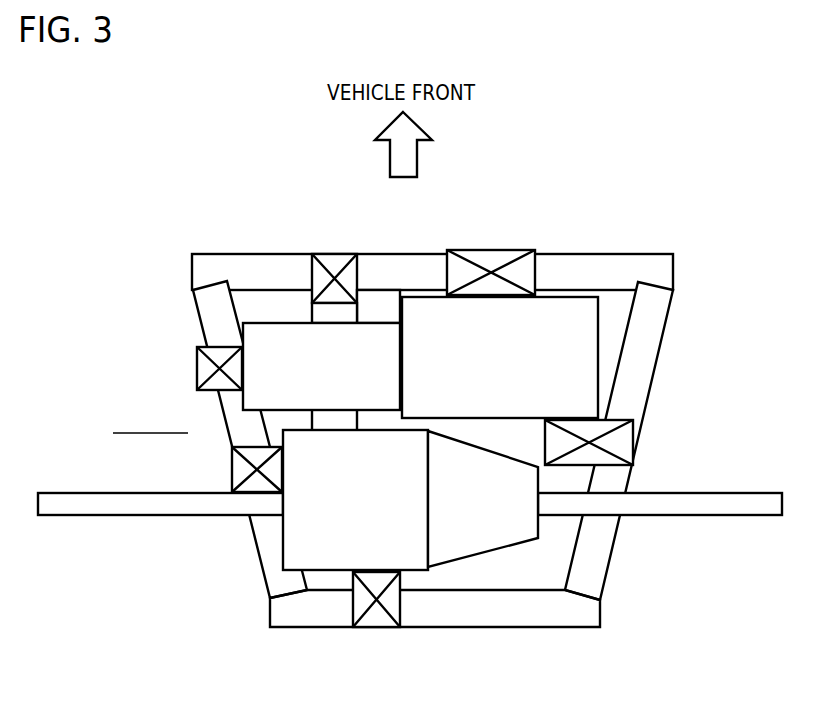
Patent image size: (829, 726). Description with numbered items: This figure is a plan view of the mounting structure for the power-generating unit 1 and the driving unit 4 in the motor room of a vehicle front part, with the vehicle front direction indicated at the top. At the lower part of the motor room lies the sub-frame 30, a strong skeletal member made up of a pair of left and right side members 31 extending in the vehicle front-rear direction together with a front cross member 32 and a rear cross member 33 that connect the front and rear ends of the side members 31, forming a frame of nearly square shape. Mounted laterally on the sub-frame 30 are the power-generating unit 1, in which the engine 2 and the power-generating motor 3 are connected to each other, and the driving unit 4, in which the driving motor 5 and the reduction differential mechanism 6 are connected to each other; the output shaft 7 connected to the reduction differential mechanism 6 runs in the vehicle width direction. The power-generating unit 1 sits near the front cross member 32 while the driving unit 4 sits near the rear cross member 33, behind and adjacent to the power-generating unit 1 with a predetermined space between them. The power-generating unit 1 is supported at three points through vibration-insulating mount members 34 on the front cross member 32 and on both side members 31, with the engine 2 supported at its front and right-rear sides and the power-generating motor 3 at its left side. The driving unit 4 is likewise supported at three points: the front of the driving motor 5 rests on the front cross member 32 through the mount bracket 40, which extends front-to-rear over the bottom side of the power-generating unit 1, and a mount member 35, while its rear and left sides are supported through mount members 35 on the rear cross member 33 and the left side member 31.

The power-generating unit 1 is at (600, 357).
The engine 2 is at (443, 448).
The power-generating motor 3 is at (377, 318).
The driving unit 4 is at (470, 558).
The driving motor 5 is at (330, 571).
The reduction differential mechanism 6 is at (522, 542).
The output shaft 7 is at (87, 492).
The sub-frame 30 is at (443, 450).
The side members 31 is at (250, 518).
The front cross member 32 is at (662, 255).
The rear cross member 33 is at (423, 630).
The mount members 34 is at (512, 250).
The mount members 35 is at (332, 253).
The mount bracket 40 is at (308, 313).